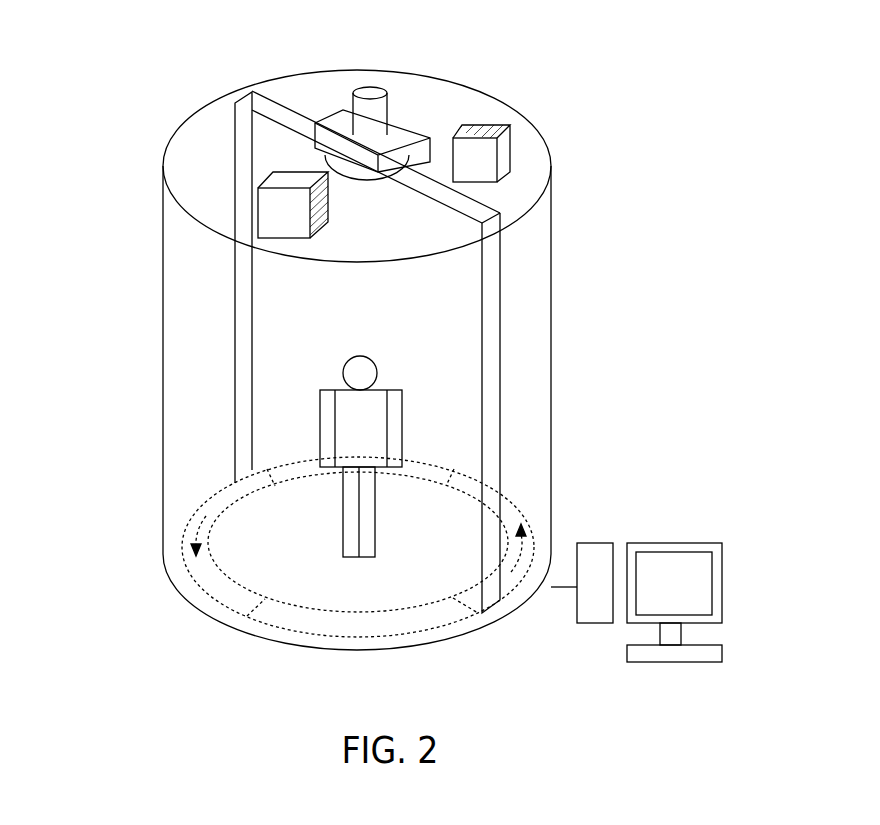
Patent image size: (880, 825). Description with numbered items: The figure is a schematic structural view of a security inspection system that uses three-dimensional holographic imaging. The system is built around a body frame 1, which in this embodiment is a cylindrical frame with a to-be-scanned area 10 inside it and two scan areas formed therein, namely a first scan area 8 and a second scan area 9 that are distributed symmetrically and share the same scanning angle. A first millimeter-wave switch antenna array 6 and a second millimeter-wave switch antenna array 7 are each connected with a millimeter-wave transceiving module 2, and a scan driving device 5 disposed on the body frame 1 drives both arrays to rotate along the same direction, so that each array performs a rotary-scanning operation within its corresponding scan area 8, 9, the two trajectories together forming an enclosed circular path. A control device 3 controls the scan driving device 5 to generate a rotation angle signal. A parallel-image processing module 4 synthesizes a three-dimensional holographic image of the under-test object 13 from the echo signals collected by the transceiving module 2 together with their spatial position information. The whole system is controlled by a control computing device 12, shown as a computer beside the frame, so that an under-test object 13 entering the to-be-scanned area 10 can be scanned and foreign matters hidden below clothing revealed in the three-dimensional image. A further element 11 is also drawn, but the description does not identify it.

The body frame 1 is at (163, 427).
The millimeter-wave transceiving module 2 is at (337, 115).
The control device 3 is at (483, 155).
The parallel-image processing module 4 is at (270, 212).
The scan driving device 5 is at (375, 88).
The first millimeter-wave switch antenna array 6 is at (240, 330).
The second millimeter-wave switch antenna array 7 is at (488, 412).
The first scan area 8 is at (210, 575).
The second scan area 9 is at (517, 527).
The to-be-scanned area 10 is at (358, 625).
The rotating platform 11 is at (412, 462).
The control computing device 12 is at (685, 585).
The under-test object 13 is at (373, 450).